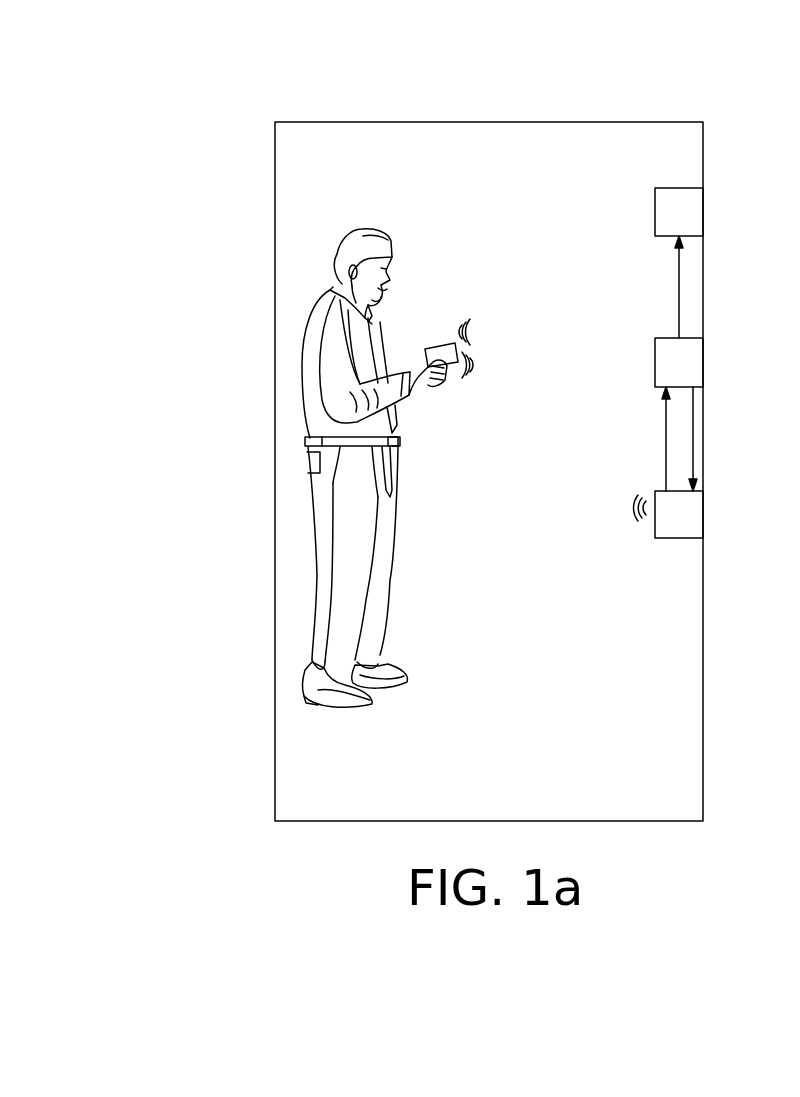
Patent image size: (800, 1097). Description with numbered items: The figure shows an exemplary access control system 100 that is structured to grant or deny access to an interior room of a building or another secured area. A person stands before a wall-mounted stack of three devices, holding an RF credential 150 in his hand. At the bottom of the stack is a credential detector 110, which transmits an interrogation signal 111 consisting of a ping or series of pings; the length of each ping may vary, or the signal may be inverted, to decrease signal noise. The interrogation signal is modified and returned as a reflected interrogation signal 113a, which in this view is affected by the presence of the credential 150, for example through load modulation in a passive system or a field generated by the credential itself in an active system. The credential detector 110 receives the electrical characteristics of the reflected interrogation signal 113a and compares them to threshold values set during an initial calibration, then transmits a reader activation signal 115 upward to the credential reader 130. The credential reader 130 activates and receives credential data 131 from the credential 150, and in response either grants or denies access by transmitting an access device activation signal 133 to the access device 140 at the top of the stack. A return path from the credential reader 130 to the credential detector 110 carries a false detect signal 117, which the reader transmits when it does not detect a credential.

The access control system 100 is at (217, 168).
The credential detector 110 is at (660, 540).
The interrogation signal 111 is at (635, 508).
The reflected interrogation signal 113a is at (470, 378).
The reader activation signal 115 is at (666, 448).
The false detect signal 117 is at (693, 430).
The credential reader 130 is at (655, 364).
The credential data 131 is at (470, 333).
The access device activation signal 133 is at (679, 302).
The access device 140 is at (655, 210).
The credential 150 is at (438, 343).